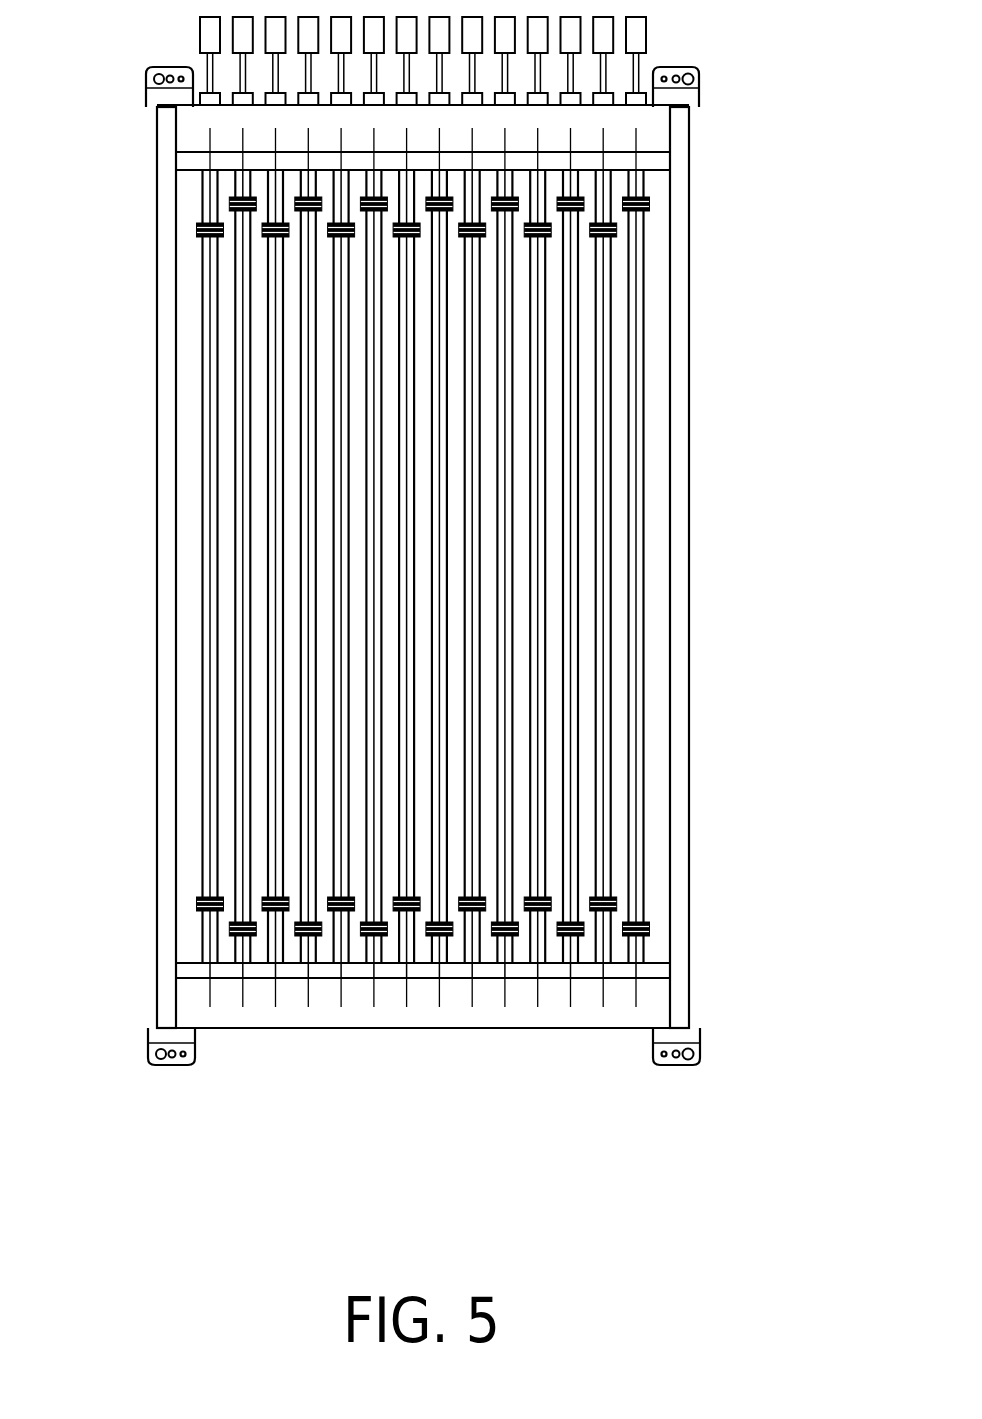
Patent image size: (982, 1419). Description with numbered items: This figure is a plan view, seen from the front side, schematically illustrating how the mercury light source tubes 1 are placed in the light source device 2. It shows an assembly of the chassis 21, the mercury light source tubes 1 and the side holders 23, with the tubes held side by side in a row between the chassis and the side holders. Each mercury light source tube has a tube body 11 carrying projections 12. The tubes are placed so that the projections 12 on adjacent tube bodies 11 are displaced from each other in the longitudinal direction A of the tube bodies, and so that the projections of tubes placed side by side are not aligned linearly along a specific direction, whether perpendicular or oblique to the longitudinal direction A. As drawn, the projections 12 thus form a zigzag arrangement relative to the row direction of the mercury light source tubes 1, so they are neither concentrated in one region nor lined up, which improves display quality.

The light source device 2 is at (303, 1082).
The chassis 21 is at (688, 245).
The side holders 23 is at (652, 123).
The mercury light source tubes 1 is at (645, 318).
The tube bodies 11 is at (498, 574).
The projections 12 is at (647, 197).
The longitudinal direction A is at (210, 302).